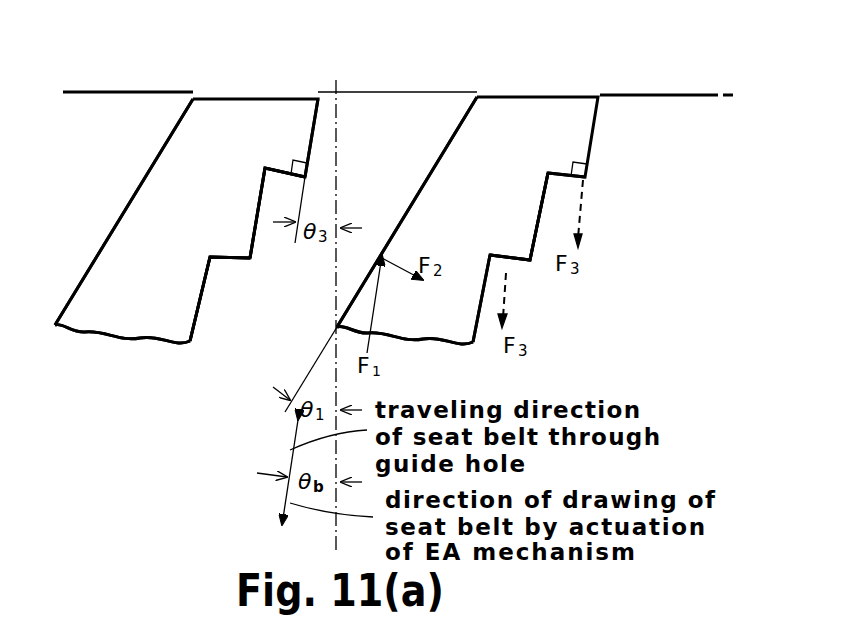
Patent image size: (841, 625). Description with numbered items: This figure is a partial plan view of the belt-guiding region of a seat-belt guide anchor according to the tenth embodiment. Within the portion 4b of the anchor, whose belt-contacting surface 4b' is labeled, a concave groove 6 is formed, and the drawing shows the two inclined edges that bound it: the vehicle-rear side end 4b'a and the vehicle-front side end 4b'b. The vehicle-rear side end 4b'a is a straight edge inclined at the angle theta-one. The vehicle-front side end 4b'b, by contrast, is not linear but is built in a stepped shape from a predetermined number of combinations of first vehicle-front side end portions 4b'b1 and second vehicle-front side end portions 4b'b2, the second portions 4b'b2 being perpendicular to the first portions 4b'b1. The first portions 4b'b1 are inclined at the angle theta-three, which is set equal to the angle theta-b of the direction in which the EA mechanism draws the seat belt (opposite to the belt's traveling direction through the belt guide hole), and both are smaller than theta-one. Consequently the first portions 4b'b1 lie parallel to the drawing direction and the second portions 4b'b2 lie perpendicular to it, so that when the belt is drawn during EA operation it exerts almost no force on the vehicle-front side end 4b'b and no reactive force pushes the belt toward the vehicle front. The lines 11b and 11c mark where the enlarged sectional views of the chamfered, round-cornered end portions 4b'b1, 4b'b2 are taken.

The concave groove 6 is at (252, 100).
The guide plate 4b is at (326, 254).
The surface of guide plate 4b' is at (398, 73).
The vehicle-rear side end 4b'a is at (266, 212).
The vehicle-front side end 4b'b is at (267, 303).
The first vehicle-front side end portion 4b'b1 is at (378, 224).
The second vehicle-front side end portion 4b'b2 is at (398, 189).
The section line 11b— 11b is at (243, 193).
The section line 11c— 11c is at (282, 100).